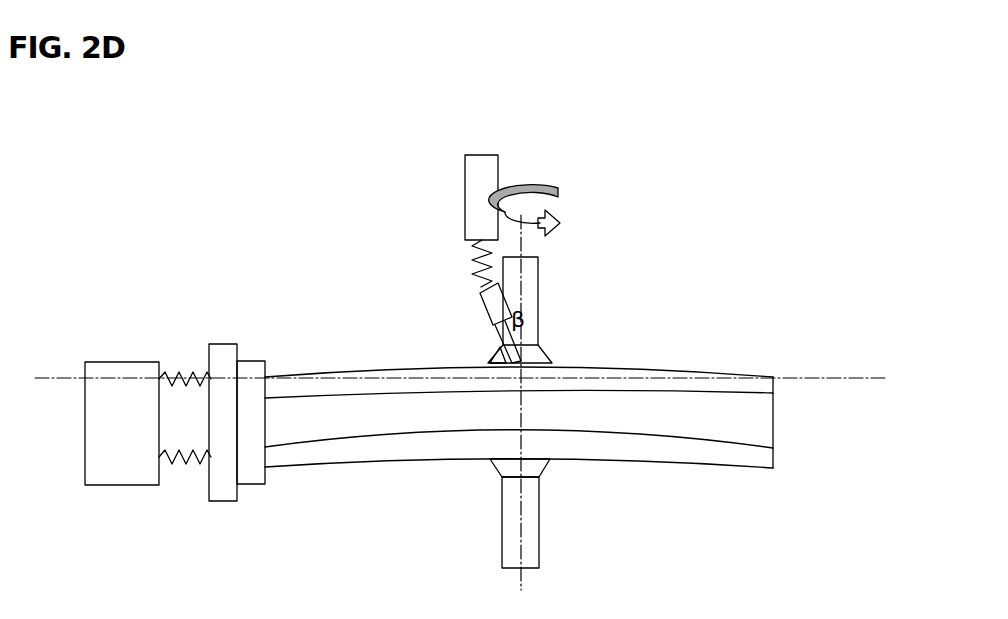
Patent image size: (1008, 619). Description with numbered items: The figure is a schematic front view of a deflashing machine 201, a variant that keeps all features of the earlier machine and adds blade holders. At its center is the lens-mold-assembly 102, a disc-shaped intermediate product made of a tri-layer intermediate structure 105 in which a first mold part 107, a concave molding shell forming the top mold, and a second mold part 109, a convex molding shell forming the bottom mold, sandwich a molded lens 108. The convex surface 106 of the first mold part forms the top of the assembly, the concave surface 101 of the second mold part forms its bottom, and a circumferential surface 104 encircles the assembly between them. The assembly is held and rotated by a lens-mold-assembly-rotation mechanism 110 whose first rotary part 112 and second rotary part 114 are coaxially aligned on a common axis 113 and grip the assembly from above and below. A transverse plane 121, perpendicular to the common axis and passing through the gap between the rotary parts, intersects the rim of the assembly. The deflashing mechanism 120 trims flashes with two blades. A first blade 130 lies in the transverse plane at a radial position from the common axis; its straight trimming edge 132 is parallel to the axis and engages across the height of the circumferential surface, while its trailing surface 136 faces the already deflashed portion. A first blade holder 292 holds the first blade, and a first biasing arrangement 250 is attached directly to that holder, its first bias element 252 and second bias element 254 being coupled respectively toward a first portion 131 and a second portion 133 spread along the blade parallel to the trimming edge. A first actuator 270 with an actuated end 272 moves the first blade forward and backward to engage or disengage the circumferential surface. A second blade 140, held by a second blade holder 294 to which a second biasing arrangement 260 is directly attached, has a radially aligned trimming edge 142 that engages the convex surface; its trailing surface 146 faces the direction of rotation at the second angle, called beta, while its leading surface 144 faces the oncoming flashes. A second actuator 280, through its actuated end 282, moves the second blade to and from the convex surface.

The deflashing mechanism 120 is at (385, 162).
The second actuator 280 is at (473, 162).
The second biasing arrangement 260 is at (493, 287).
The second blade holder 294 is at (505, 330).
The actuated end of the second actuator 282 is at (461, 240).
The second blade 140 is at (500, 340).
The first blade 130 is at (255, 361).
The first blade holder 292 is at (224, 357).
The first actuator 270 is at (120, 407).
The first biasing arrangement 250 is at (222, 316).
The second bias element 254 is at (167, 407).
The first bias element 252 is at (195, 387).
The first portion of the first blade 131 is at (265, 362).
The trimming edge of the first blade 132 is at (243, 382).
The second portion of the first blade 133 is at (243, 472).
The actuated end of the first actuator 272 is at (160, 477).
The trailing surface of the first blade 136 is at (250, 474).
The leading surface of the second blade 144 is at (498, 346).
The trimming edge of the second blade 142 is at (493, 348).
The trailing surface of the second blade 146 is at (537, 333).
The second rotary part 114 is at (533, 520).
The first rotary part 112 is at (535, 283).
The common axis 113 is at (523, 247).
The lens-mold-assembly-rotation mechanism 110 is at (633, 277).
The convex surface of the first mold part 106 is at (665, 368).
The deflashing machine 201 is at (720, 258).
The lens-mold-assembly 102 is at (750, 362).
The transverse plane 121 is at (877, 378).
The first mold part 107 is at (763, 393).
The molded lens 108 is at (762, 422).
The second mold part 109 is at (765, 455).
The tri-layer intermediate structure 105 is at (856, 387).
The circumferential surface 104 is at (775, 467).
The concave surface of the second mold part 101 is at (647, 465).